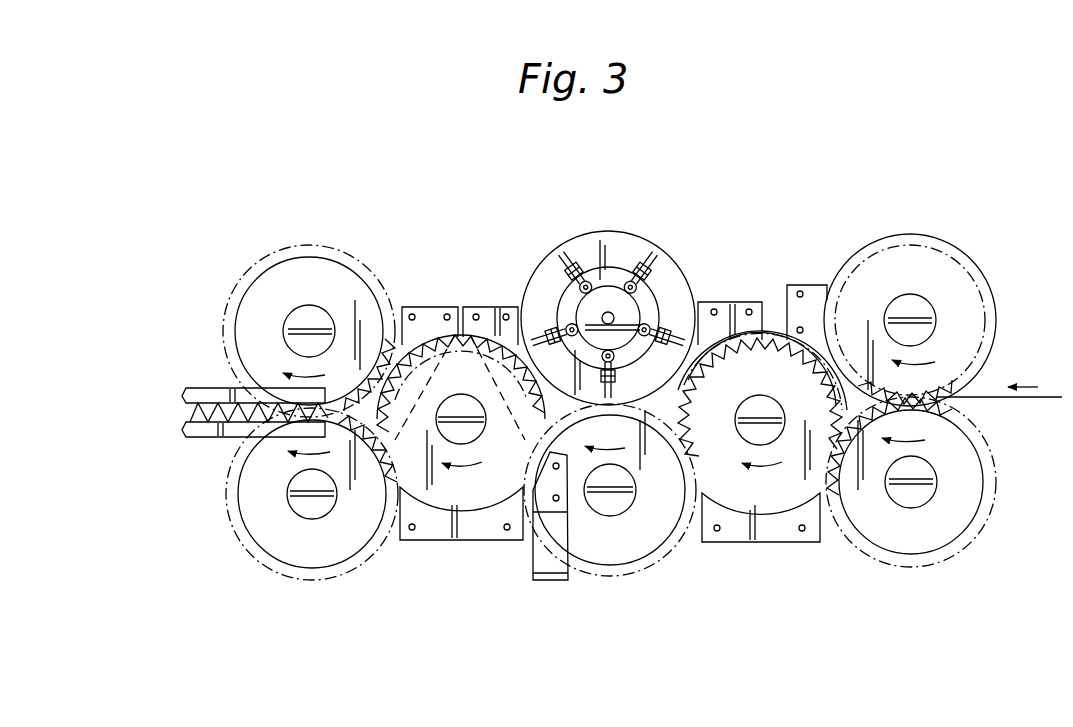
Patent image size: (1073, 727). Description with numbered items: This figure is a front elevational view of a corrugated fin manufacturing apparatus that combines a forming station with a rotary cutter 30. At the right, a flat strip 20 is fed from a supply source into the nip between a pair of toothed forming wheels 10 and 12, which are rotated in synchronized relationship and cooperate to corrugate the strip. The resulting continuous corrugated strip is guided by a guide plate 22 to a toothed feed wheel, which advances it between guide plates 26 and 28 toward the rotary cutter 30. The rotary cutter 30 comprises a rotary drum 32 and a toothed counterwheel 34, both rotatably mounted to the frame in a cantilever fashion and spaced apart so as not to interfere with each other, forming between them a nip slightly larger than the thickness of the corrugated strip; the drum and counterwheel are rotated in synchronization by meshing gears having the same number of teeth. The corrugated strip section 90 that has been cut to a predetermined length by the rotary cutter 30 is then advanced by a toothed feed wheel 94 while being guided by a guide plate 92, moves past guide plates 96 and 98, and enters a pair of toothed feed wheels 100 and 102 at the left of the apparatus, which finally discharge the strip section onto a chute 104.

The toothed forming wheel 10 is at (975, 300).
The toothed forming wheel 12 is at (958, 530).
The flat strip 20 is at (1050, 398).
The guide plate 22 is at (812, 290).
The guide plate 26 is at (772, 543).
The guide plate 28 is at (738, 304).
The rotary cutter 30 is at (622, 301).
The rotary drum 32 is at (628, 250).
The toothed counterwheel 34 is at (658, 540).
The corrugated strip section 90 is at (190, 398).
The guide plate 92 is at (490, 306).
The toothed feed wheel 94 is at (473, 520).
The guide plate 96 is at (428, 540).
The guide plate 98 is at (430, 306).
The toothed feed wheel 100 is at (360, 292).
The toothed feed wheel 102 is at (358, 542).
The chute 104 is at (200, 438).